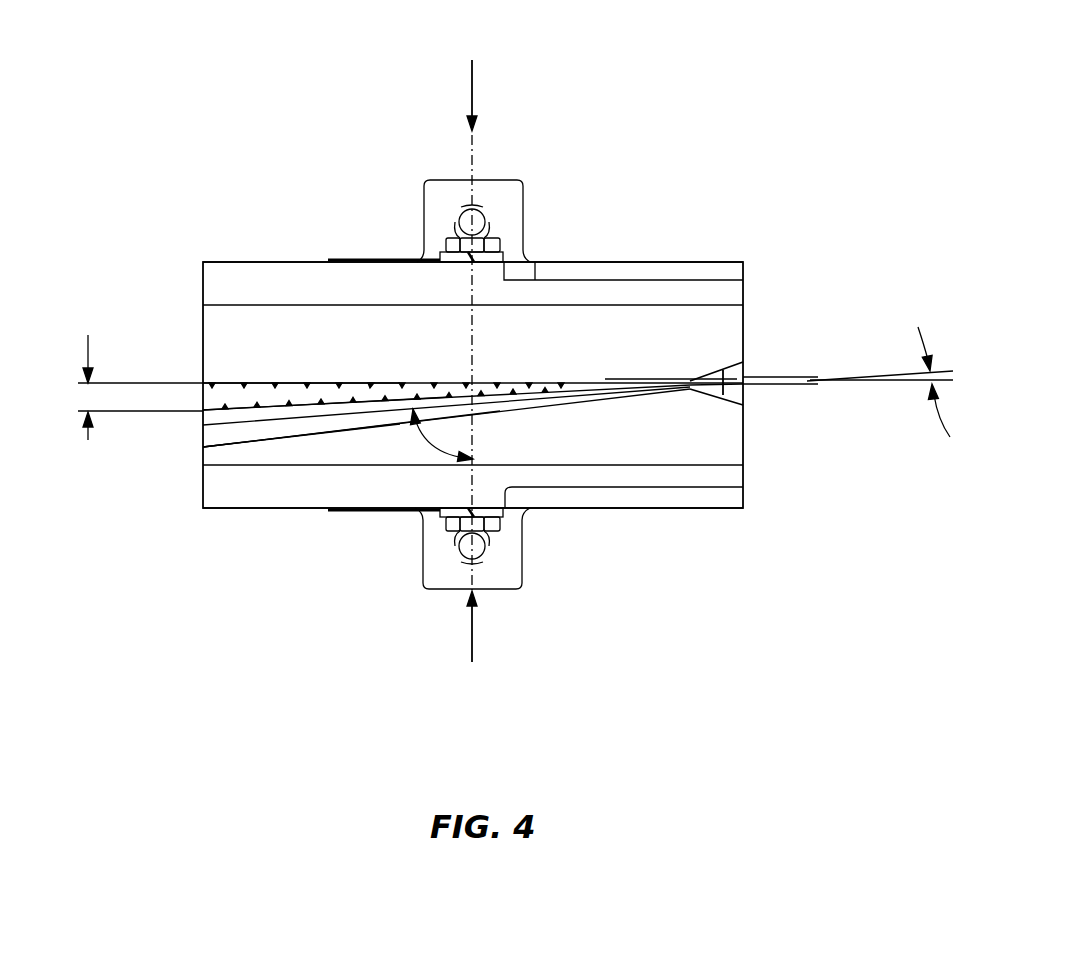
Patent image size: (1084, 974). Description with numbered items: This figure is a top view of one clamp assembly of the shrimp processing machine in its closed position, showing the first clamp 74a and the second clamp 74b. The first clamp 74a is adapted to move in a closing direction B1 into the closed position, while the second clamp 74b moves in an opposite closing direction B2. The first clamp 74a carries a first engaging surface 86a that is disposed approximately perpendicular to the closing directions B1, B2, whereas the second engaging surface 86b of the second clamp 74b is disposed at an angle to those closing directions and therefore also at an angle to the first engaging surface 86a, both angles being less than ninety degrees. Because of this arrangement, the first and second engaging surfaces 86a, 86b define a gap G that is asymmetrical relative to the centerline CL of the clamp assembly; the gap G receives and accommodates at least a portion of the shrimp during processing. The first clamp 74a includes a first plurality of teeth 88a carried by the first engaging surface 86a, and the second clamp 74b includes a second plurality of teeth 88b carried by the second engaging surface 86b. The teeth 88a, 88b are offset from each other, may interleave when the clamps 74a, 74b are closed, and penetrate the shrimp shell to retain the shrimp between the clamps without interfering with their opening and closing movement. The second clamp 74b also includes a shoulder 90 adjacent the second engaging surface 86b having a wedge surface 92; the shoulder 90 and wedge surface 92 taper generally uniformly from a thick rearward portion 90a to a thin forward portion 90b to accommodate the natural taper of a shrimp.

The first clamp 74a is at (706, 312).
The second clamp 74b is at (683, 462).
The first engaging surface 86a is at (205, 424).
The second engaging surface 86b is at (300, 405).
The first plurality of teeth 88a is at (213, 478).
The second plurality of teeth 88b is at (252, 383).
The shoulder 90 is at (268, 455).
The thick rearward portion 90a is at (206, 450).
The thin forward portion 90b is at (645, 393).
The wedge surface 92 is at (308, 412).
The closing direction of first clamp B1 is at (474, 72).
The closing direction of second clamp B2 is at (475, 633).
The gap G is at (86, 360).
The centerline CL is at (884, 372).